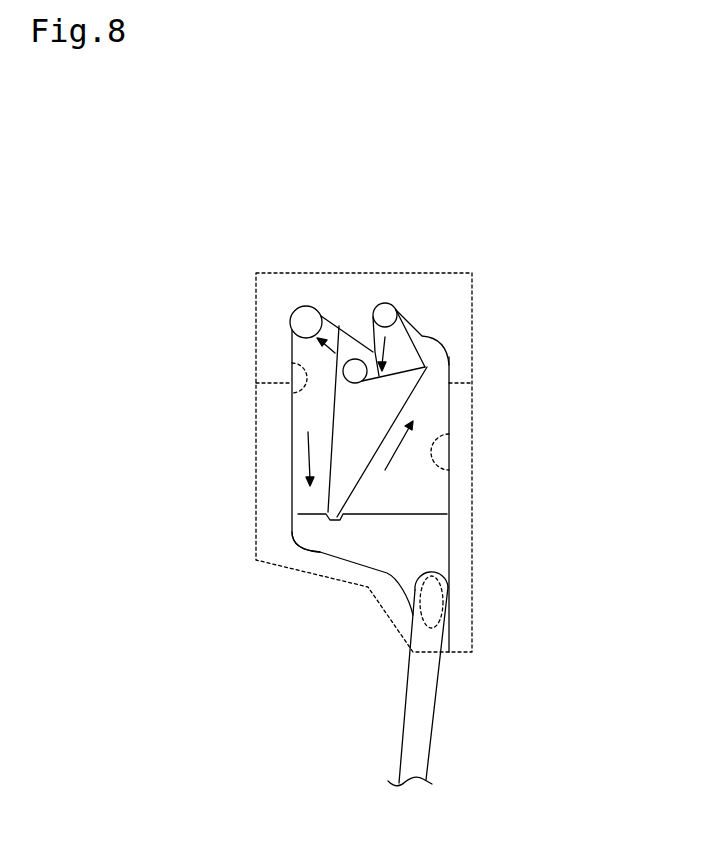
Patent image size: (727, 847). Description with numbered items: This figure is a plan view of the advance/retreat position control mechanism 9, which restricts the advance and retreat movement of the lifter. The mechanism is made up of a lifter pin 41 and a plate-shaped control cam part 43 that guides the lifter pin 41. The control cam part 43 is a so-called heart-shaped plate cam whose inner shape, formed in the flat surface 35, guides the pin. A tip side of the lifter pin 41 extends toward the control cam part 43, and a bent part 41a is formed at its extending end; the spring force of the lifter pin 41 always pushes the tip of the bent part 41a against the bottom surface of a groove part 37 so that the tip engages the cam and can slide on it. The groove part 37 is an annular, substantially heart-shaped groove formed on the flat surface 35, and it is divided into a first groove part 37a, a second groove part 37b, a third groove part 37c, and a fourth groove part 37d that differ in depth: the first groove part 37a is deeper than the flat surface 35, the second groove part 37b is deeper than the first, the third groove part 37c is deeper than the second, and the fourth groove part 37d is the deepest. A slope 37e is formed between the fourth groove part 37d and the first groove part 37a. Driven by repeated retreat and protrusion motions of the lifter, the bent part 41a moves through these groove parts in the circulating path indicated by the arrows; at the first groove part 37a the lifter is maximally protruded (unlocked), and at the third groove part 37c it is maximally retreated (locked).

The advance/retreat position control mechanism 9 is at (250, 190).
The flat surface 35 is at (460, 387).
The groove part 37 is at (432, 452).
The first groove part 37a is at (422, 510).
The second groove part 37b is at (397, 347).
The third groove part 37c is at (339, 328).
The fourth groove part 37d is at (292, 400).
The slope 37e is at (315, 525).
The lifter pin 41 is at (423, 740).
The bent part 41a is at (423, 588).
The control cam part 43 is at (503, 328).